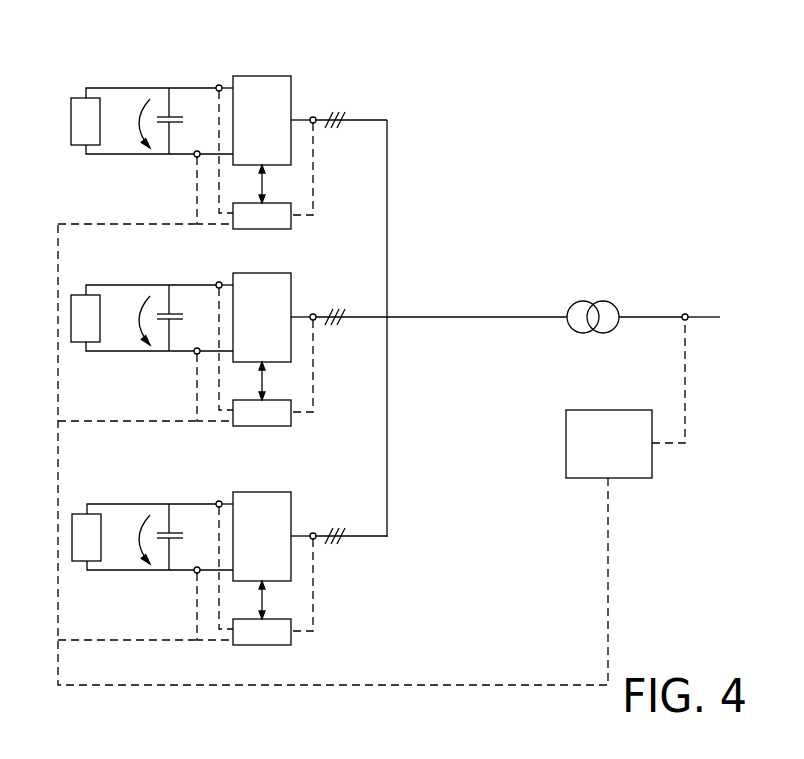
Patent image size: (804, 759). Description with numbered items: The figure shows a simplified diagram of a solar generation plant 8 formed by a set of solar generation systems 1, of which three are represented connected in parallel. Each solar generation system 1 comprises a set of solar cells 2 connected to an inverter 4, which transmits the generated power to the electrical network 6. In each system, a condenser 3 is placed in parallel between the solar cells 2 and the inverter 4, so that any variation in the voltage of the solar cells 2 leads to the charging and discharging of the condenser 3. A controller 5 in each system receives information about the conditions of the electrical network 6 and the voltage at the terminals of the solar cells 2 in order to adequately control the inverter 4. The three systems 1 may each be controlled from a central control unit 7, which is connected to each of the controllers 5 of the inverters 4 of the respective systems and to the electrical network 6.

The solar generation system 1 is at (306, 69).
The solar cells 2 is at (152, 329).
The condenser 3 is at (165, 329).
The inverter 4 is at (262, 328).
The controller 5 is at (174, 368).
The electrical network 6 is at (701, 305).
The central control unit 7 is at (371, 454).
The solar generation plant 8 is at (442, 238).